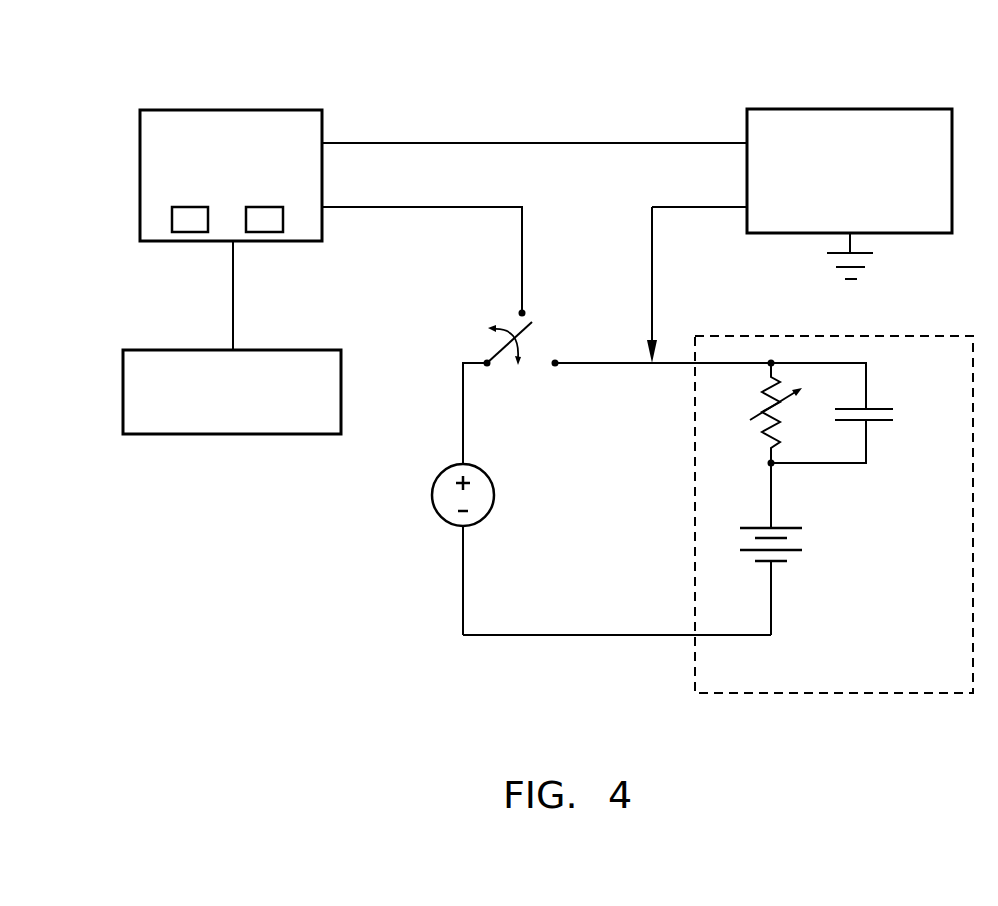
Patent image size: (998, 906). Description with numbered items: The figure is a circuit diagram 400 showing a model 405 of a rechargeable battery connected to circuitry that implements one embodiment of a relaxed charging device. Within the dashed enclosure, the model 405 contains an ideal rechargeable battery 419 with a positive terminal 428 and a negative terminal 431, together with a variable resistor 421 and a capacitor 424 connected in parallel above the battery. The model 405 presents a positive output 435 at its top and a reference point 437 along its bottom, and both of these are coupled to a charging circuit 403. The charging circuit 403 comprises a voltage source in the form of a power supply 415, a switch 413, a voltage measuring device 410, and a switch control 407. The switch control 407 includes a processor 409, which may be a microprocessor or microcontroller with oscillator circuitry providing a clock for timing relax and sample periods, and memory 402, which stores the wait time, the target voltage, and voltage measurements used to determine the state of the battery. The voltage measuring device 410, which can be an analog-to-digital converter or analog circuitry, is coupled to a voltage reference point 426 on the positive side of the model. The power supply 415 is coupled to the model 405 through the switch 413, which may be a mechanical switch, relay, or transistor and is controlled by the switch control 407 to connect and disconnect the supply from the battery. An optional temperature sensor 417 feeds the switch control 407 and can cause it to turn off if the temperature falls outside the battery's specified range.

The circuit diagram 400 is at (576, 70).
The memory 402 is at (262, 225).
The charging circuit 403 is at (441, 686).
The model of a rechargeable battery 405 is at (738, 695).
The switch control 407 is at (188, 108).
The processor 409 is at (192, 227).
The voltage measuring device 410 is at (903, 107).
The switch 413 is at (553, 338).
The power supply 415 is at (442, 472).
The temperature sensor 417 is at (142, 437).
The ideal rechargeable battery 419 is at (793, 553).
The variable resistor 421 is at (752, 417).
The capacitor 424 is at (880, 407).
The voltage reference point 426 is at (657, 363).
The positive terminal 428 is at (772, 492).
The negative terminal 431 is at (772, 637).
The positive output 435 is at (688, 365).
The reference point 437 is at (695, 633).